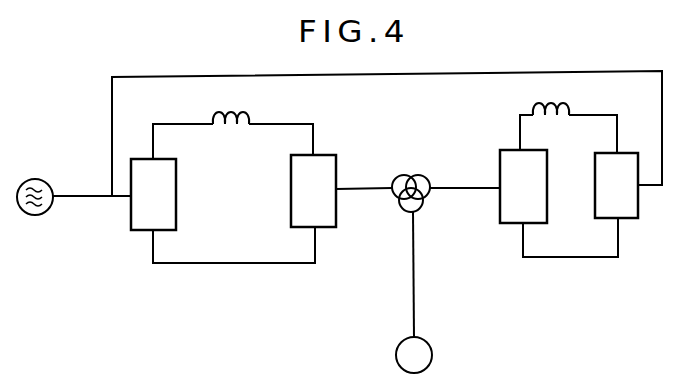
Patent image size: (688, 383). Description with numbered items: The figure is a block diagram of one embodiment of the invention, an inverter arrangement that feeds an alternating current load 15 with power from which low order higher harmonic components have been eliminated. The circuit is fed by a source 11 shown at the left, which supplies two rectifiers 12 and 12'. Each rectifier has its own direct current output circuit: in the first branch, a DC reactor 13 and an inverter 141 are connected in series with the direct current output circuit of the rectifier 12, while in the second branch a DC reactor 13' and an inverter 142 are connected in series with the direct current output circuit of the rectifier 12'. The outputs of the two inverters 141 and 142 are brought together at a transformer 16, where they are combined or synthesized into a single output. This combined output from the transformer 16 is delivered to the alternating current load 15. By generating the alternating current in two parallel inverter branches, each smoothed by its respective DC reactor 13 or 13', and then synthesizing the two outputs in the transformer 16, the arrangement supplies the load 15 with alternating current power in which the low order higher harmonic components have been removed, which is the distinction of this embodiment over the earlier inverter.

The high-frequency source 11 is at (52, 182).
The rectifier 12 is at (179, 194).
The DC reactor 13 is at (234, 175).
The inverter 141 is at (336, 165).
The transformer 16 is at (422, 173).
The alternating current load 15 is at (432, 343).
The inverter 142 is at (547, 163).
The DC reactor 13' is at (570, 168).
The rectifier 12' is at (628, 165).